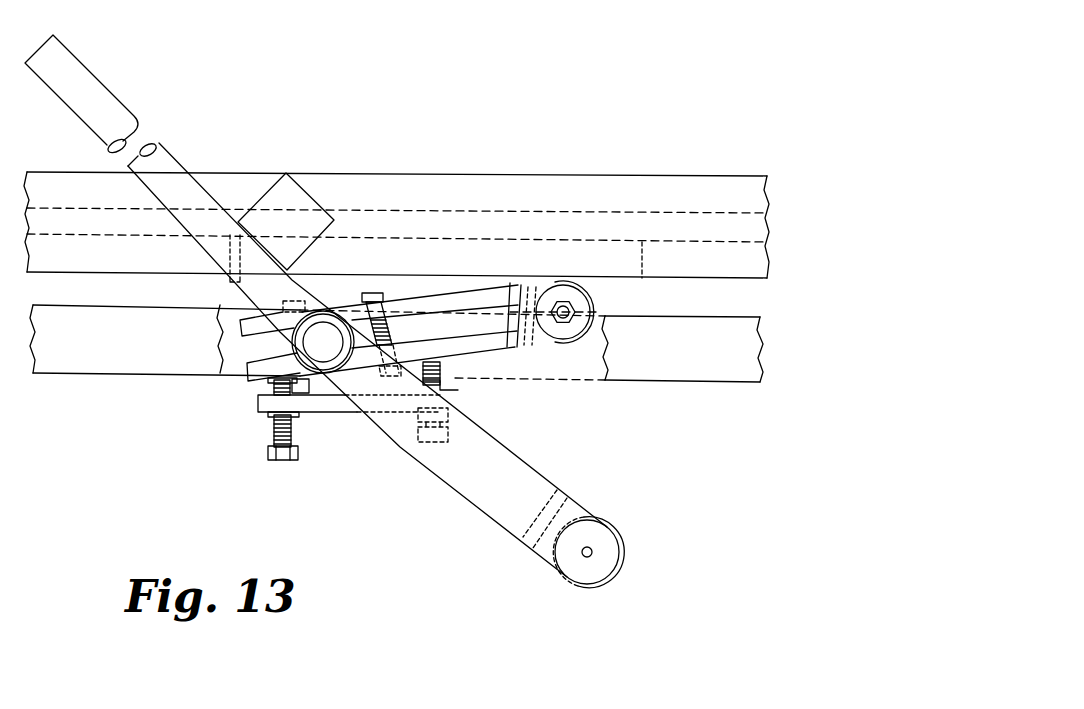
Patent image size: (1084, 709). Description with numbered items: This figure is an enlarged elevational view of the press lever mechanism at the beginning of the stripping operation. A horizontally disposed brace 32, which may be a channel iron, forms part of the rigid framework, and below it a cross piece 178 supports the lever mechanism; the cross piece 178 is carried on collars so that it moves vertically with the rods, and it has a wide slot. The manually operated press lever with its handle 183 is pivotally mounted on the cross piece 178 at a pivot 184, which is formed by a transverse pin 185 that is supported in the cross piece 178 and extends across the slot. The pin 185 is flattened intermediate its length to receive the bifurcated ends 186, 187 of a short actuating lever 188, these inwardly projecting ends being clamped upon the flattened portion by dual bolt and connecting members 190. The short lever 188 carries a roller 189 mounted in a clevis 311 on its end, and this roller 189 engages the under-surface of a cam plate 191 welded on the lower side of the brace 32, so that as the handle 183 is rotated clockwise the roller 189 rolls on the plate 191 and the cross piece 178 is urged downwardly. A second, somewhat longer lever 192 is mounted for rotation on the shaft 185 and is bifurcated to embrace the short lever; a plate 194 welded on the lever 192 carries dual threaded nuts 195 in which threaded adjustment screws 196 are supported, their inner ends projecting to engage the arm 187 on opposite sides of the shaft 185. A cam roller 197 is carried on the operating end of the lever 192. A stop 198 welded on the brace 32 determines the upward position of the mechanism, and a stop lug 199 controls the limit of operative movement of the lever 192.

The brace 32 is at (227, 178).
The cross piece 178 is at (708, 376).
The handle 183 is at (105, 98).
The pivot 184 is at (323, 342).
The transverse pin 185 is at (332, 352).
The bifurcated end 186 is at (463, 295).
The bifurcated end 187 is at (490, 347).
The short actuating lever 188 is at (530, 348).
The roller 189 is at (578, 345).
The bolt and connecting members 190 is at (373, 293).
The cam plate 191 is at (642, 262).
The longer lever 192 is at (497, 515).
The plate 194 is at (260, 408).
The threaded nuts 195 is at (268, 417).
The threaded adjustment screws 196 is at (300, 456).
The cam roller 197 is at (588, 587).
The stop 198 is at (290, 184).
The stop lug 199 is at (223, 280).
The clevis 311 is at (583, 305).